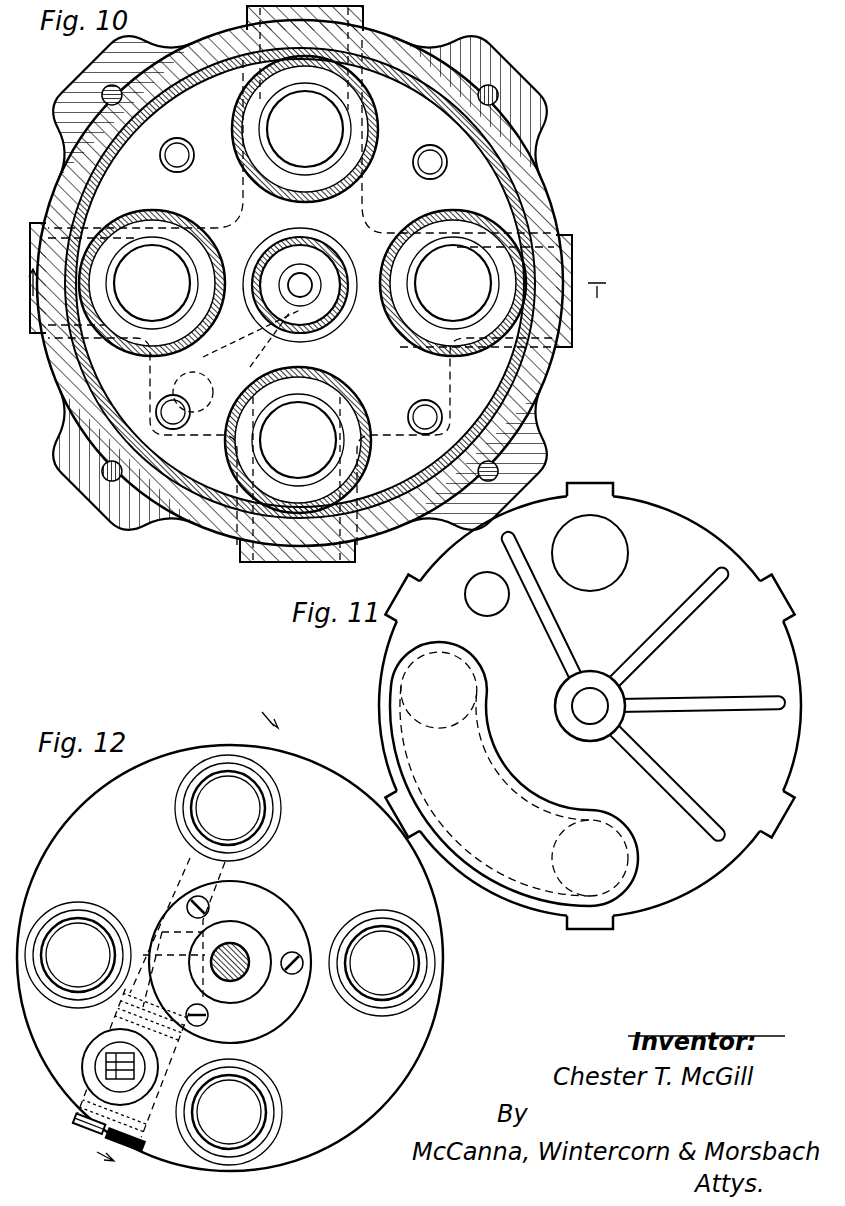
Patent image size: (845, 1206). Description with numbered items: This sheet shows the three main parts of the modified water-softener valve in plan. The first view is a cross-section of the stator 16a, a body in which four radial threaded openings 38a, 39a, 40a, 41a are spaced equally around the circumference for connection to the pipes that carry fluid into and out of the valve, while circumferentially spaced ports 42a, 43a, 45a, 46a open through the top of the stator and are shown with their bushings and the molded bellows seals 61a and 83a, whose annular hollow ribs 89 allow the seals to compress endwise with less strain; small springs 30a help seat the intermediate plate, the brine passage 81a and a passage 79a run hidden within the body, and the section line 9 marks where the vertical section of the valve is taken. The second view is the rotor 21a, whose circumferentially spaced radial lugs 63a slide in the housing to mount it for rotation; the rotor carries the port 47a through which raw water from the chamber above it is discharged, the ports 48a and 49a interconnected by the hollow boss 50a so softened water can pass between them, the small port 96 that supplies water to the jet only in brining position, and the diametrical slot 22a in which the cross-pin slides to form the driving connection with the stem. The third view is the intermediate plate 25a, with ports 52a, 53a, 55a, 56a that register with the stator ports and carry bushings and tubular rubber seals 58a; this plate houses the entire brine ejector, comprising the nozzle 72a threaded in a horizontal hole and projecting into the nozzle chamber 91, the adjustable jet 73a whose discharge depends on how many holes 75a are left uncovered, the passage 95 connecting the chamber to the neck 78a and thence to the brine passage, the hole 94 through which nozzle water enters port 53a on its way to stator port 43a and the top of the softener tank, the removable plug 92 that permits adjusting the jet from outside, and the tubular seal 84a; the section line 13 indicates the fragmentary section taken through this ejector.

In FIG. 10, the stator 16a is at (533, 172).
In FIG. 10, the radial threaded opening 38a is at (38, 253).
In FIG. 10, the radial threaded opening 39a is at (364, 18).
In FIG. 10, the radial threaded opening 40a is at (576, 275).
In FIG. 10, the radial threaded opening 41a is at (264, 562).
In FIG. 10, the stator port 42a is at (133, 312).
In FIG. 10, the stator port 43a is at (333, 127).
In FIG. 10, the stator port 45a is at (417, 308).
In FIG. 10, the stator port 46a is at (327, 450).
In FIG. 10, the springs 30a is at (443, 174).
In FIG. 10, the tubular seal 61a is at (213, 250).
In FIG. 10, the tubular seal 83a is at (338, 258).
In FIG. 10, the passage 79a is at (262, 333).
In FIG. 10, the brine passage 81a is at (258, 357).
In FIG. 10, the annular hollow ribs 89 is at (228, 225).
In FIG. 10, the section line 9- 9 is at (316, 292).
In FIG. 11, the rotor 21a is at (689, 522).
In FIG. 11, the radial lugs 63a is at (612, 483).
In FIG. 11, the rotor port 47a is at (626, 568).
In FIG. 11, the port 96 is at (489, 616).
In FIG. 11, the rotor port 49a is at (478, 686).
In FIG. 11, the hollow boss 50a is at (517, 782).
In FIG. 11, the rotor port 48a is at (626, 864).
In FIG. 11, the diametrical slot 22a is at (556, 707).
In FIG. 12, the intermediate plate 25a is at (423, 902).
In FIG. 12, the plate port 52a is at (72, 927).
In FIG. 12, the plate port 53a is at (270, 832).
In FIG. 12, the plate port 55a is at (360, 992).
In FIG. 12, the plate port 56a is at (262, 1121).
In FIG. 12, the tubular rubber seal 58a is at (50, 1003).
In FIG. 12, the nozzle 72a is at (118, 972).
In FIG. 12, the hole 94 is at (213, 893).
In FIG. 12, the passage 95 is at (222, 988).
In FIG. 12, the nozzle chamber 91 is at (210, 1008).
In FIG. 12, the adjustable jet 73a is at (116, 1070).
In FIG. 12, the tubular seal 84a is at (92, 1068).
In FIG. 12, the holes 75a is at (150, 1057).
In FIG. 12, the plug 92 is at (80, 1122).
In FIG. 12, the neck 78a is at (137, 1130).
In FIG. 12, the section line 13- 13 is at (172, 932).